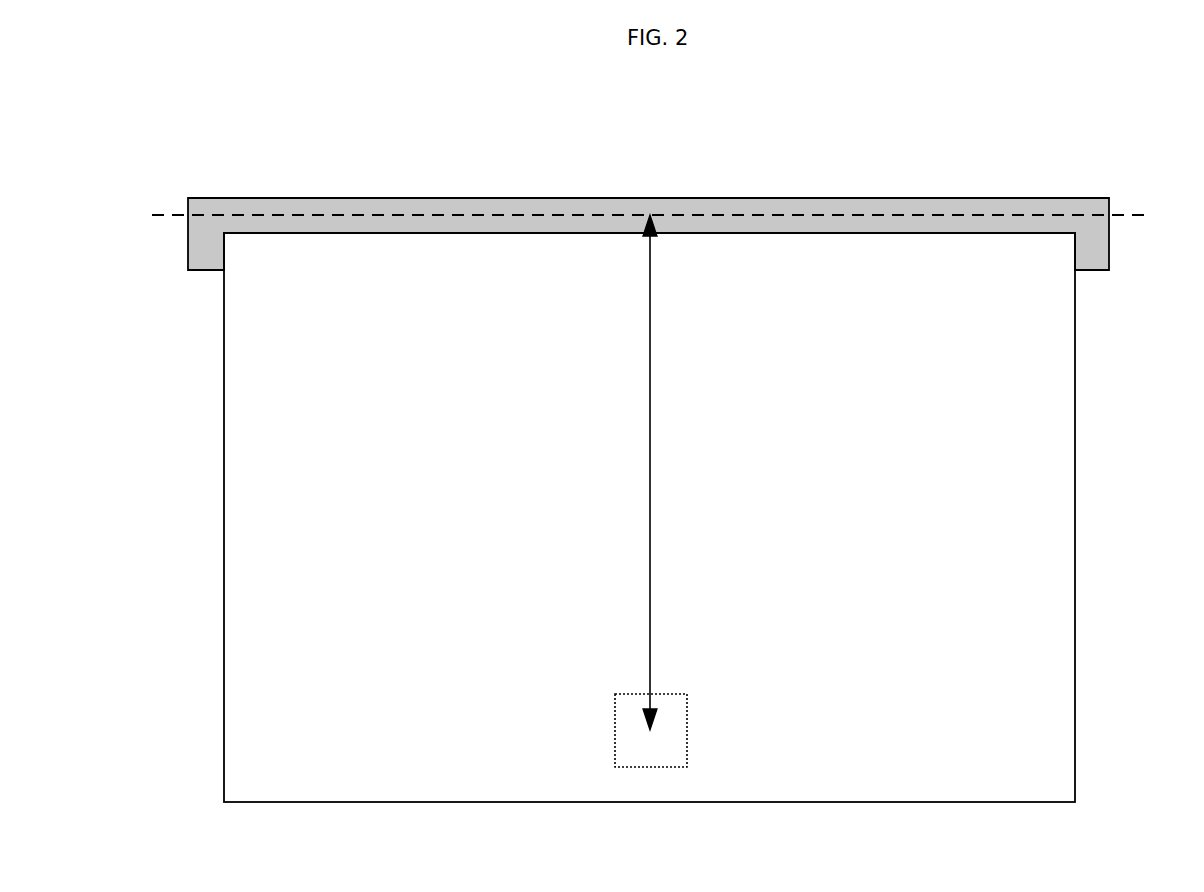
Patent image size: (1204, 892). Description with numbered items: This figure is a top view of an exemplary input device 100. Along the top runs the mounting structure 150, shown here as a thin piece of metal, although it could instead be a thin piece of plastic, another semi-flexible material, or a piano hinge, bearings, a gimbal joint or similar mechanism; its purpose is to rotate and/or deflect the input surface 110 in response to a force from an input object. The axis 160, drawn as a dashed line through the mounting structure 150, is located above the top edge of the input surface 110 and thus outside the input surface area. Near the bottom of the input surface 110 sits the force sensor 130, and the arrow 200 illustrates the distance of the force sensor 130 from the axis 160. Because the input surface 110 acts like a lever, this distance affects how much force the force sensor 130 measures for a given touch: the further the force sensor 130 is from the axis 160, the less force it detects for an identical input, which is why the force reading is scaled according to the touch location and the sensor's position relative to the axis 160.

The input device 100 is at (323, 66).
The input surface 110 is at (1075, 597).
The force sensor 130 is at (687, 758).
The mounting structure 150 is at (1109, 250).
The axis 160 is at (1128, 216).
The arrow 200 is at (650, 465).